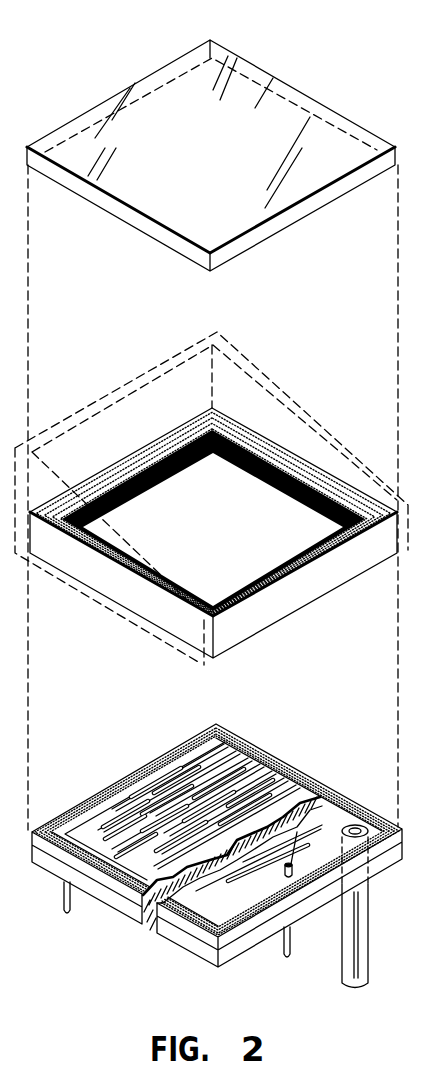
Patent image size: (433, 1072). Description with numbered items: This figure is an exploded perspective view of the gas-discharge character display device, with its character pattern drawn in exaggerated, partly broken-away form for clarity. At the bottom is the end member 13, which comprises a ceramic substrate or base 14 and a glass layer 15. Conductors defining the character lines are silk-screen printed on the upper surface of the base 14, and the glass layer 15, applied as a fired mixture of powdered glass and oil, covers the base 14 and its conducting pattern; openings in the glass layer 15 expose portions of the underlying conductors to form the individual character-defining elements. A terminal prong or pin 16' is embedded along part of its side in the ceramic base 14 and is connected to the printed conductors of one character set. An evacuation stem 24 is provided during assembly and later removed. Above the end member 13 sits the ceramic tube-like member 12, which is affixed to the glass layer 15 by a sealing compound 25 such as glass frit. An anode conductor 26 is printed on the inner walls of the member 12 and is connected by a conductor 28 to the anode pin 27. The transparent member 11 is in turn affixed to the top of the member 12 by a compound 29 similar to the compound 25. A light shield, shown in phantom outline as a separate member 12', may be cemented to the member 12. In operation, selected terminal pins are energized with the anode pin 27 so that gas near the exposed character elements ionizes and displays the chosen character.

The transparent member 11 is at (293, 84).
The ceramic tube-like member 12 is at (213, 533).
The light shield 12' is at (211, 498).
The anode conductor 26 is at (165, 470).
The sealing compound 29 is at (328, 473).
The end member 13 is at (124, 776).
The ceramic substrate or base 14 is at (282, 896).
The glass layer 15 is at (403, 834).
The terminal prong or pin 16' is at (53, 897).
The evacuation stem 24 is at (368, 938).
The sealing compound 25 is at (265, 752).
The anode pin 27 is at (292, 938).
The conductor 28 is at (293, 863).